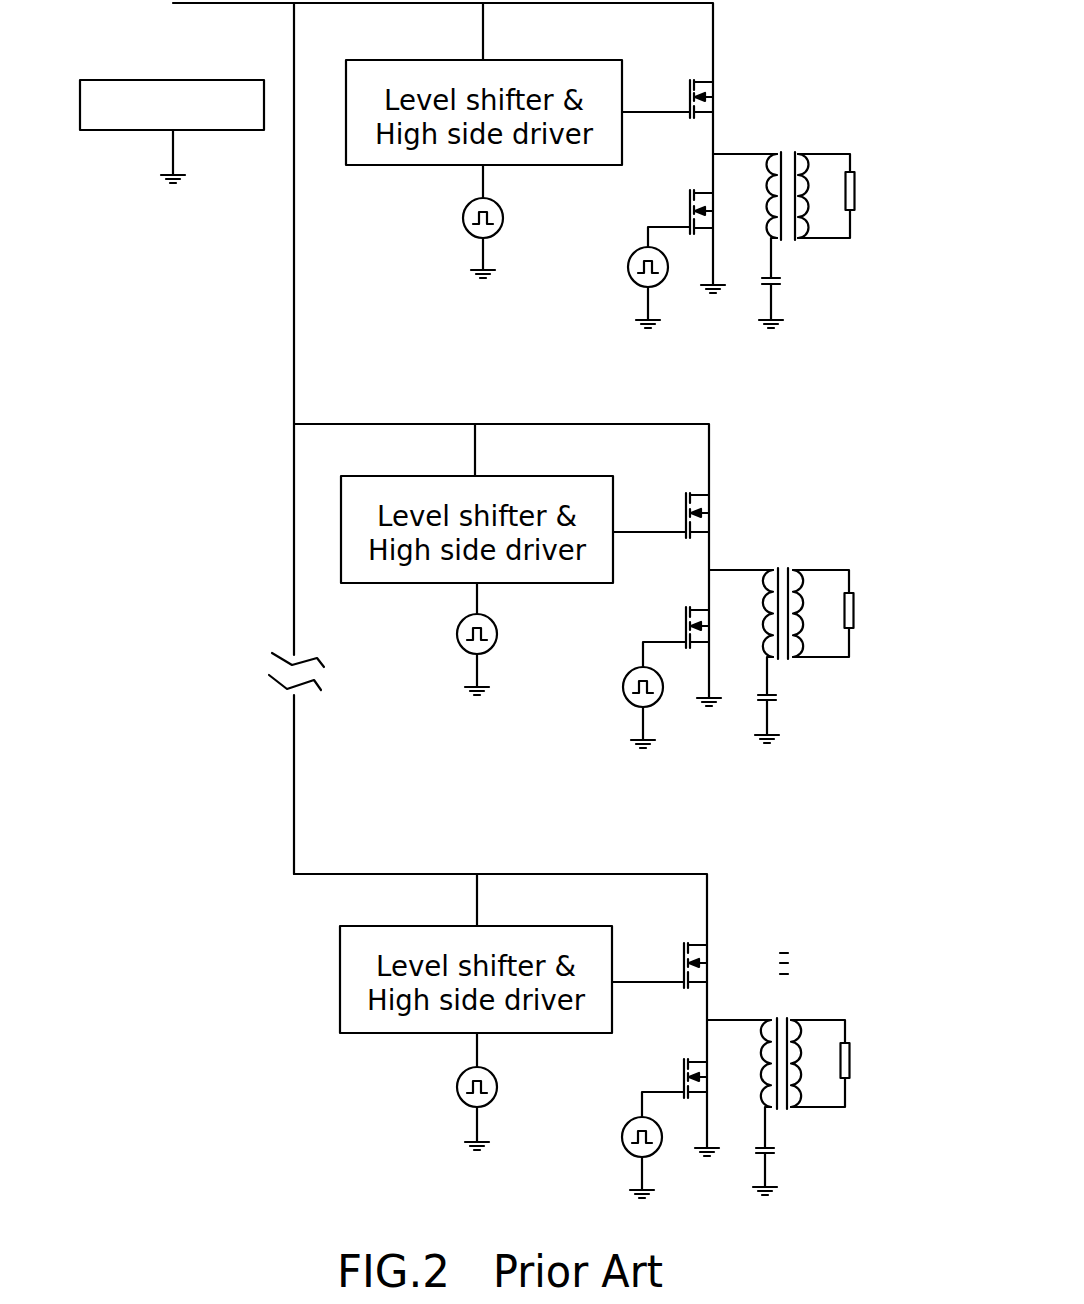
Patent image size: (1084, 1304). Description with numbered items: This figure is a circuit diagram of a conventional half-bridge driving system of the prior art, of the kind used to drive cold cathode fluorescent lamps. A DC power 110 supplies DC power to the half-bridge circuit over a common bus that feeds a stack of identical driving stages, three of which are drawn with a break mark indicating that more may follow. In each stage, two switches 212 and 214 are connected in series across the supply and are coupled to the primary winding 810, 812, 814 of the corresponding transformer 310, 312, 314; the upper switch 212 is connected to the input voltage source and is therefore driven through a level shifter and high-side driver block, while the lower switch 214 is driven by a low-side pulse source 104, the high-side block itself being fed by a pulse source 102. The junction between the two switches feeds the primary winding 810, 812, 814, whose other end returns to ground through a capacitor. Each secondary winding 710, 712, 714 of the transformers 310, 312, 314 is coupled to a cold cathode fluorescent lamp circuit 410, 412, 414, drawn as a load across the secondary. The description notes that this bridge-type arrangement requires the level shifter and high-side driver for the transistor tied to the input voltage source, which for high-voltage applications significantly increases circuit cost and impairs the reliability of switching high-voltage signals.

The DC power 110 is at (110, 79).
The high side pulse signal source 102 is at (461, 223).
The low side pulse signal source 104 is at (627, 266).
The switch 212 is at (726, 97).
The switch 214 is at (687, 215).
The transformer 310 is at (779, 166).
The transformer 312 is at (776, 583).
The transformer 314 is at (775, 1038).
The primary winding 810 is at (768, 214).
The primary winding 812 is at (765, 635).
The primary winding 814 is at (762, 1085).
The secondary winding 710 is at (825, 196).
The secondary winding 712 is at (823, 612).
The secondary winding 714 is at (823, 1062).
The cold cathode fluorescent lamp circuit 410 is at (858, 193).
The cold cathode fluorescent lamp circuit 412 is at (856, 613).
The cold cathode fluorescent lamp circuit 414 is at (852, 1065).